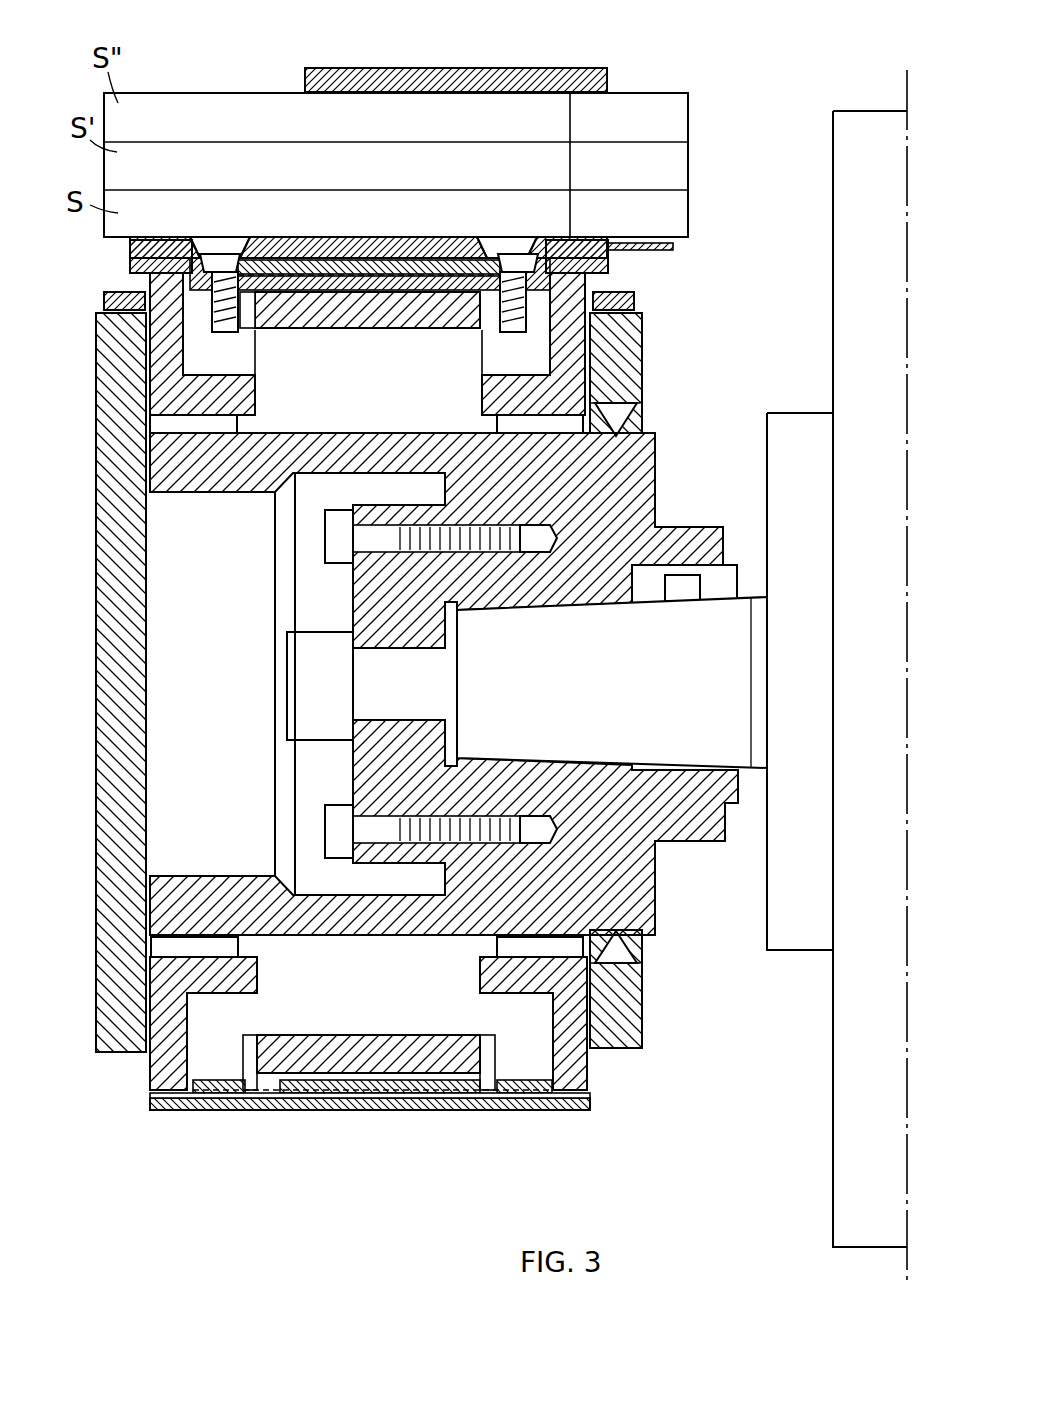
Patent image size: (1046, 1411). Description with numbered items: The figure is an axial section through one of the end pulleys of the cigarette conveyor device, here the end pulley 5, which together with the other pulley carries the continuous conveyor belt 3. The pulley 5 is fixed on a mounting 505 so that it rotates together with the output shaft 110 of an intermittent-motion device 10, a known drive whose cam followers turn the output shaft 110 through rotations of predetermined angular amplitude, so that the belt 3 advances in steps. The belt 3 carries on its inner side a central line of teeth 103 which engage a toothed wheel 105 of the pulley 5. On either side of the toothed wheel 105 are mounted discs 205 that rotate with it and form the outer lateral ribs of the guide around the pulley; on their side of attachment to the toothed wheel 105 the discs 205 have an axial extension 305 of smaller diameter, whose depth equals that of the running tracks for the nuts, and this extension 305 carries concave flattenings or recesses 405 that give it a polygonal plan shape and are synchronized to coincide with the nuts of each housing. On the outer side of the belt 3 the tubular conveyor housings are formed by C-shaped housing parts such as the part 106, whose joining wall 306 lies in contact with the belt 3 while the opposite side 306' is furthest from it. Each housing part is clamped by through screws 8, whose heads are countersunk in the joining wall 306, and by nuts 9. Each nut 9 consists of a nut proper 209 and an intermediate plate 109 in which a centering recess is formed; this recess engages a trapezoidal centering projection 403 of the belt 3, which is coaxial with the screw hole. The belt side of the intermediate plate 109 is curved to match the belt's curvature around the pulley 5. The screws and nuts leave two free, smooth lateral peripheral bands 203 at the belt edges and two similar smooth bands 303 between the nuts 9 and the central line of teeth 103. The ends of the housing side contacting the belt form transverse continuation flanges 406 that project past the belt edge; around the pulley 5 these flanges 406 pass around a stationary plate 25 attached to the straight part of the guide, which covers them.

The side furthest from the belt 306' is at (456, 46).
The housing part 106 is at (607, 80).
The joining wall 306 is at (368, 227).
The through screw 8 is at (220, 250).
The conveyor belt 3 is at (620, 255).
The centering projection 403 is at (245, 268).
The smooth band 303 is at (270, 262).
The central line of teeth 103 is at (375, 290).
The disc 205 is at (160, 268).
The continuation flange 406 is at (104, 300).
The nut 9 is at (205, 318).
The intermediate plate 109 is at (255, 305).
The nut proper 209 is at (200, 327).
The axial extension 305 is at (245, 400).
The flattening or recess 405 is at (255, 372).
The stationary plate 25 is at (110, 565).
The end pulley 5 is at (97, 712).
The output shaft 110 is at (738, 600).
The mounting 505 is at (295, 600).
The toothed wheel 105 is at (296, 1035).
The lateral peripheral band 203 is at (165, 255).
The intermittent-motion device 10 is at (828, 112).